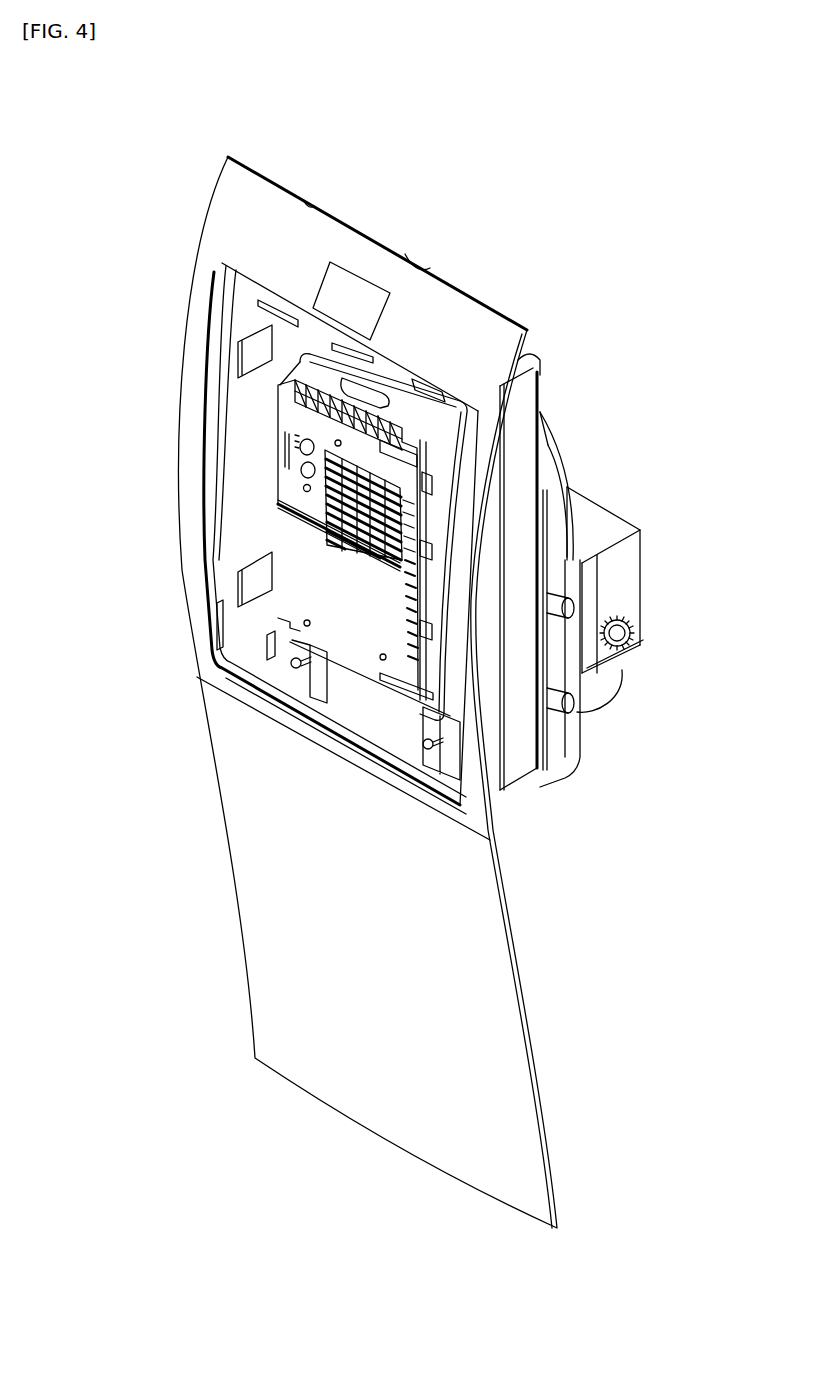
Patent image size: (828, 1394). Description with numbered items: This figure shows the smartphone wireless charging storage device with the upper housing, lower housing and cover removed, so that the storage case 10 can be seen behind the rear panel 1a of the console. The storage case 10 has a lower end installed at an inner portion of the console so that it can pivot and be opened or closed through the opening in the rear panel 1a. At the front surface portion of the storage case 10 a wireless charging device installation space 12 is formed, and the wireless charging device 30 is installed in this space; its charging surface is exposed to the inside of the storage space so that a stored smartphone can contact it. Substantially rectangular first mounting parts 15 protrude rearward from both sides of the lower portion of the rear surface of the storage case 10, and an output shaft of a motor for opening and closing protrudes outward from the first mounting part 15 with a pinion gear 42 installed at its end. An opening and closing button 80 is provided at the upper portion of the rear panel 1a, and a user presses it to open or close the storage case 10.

The rear panel 1a is at (269, 898).
The storage case 10 is at (540, 358).
The wireless charging device installation space 12 is at (305, 340).
The first mounting part 15 is at (633, 563).
The wireless charging device 30 is at (305, 563).
The pinion gear 42 is at (628, 636).
The opening and closing button 80 is at (347, 292).